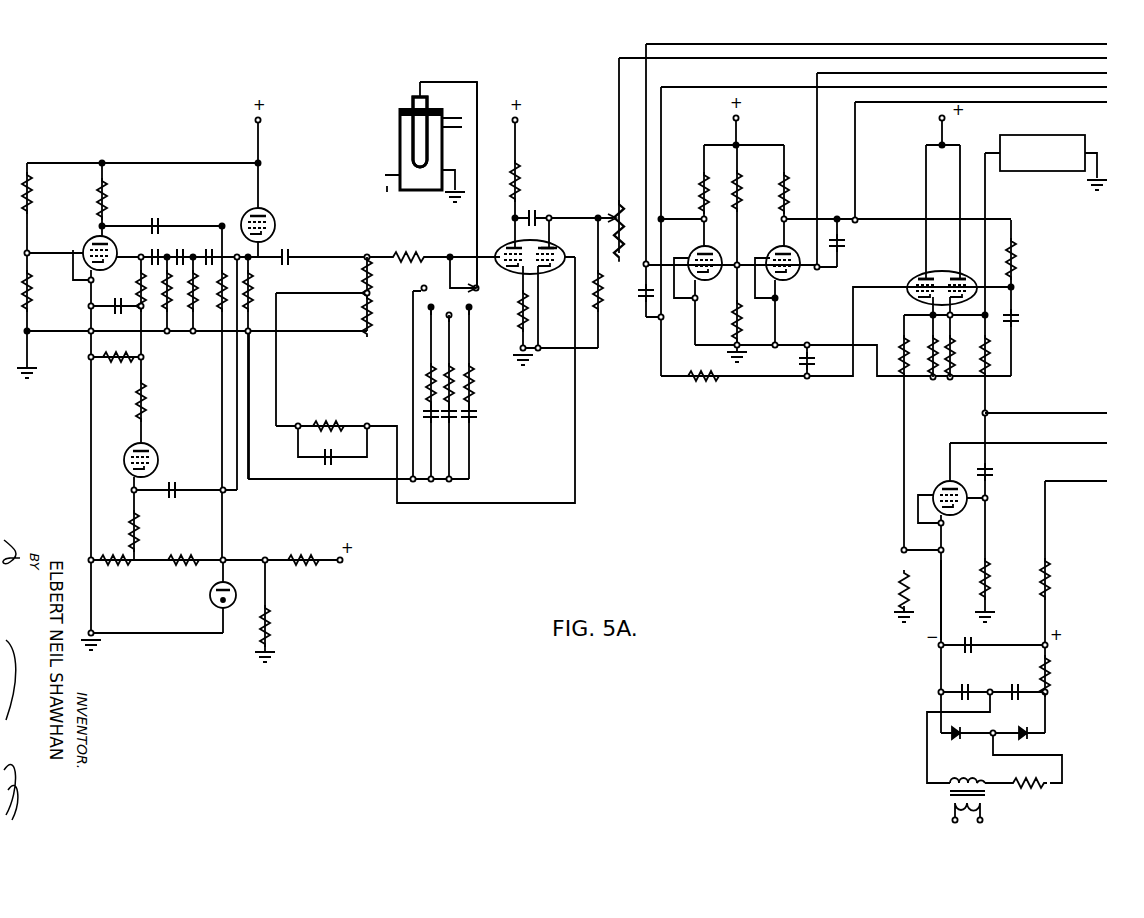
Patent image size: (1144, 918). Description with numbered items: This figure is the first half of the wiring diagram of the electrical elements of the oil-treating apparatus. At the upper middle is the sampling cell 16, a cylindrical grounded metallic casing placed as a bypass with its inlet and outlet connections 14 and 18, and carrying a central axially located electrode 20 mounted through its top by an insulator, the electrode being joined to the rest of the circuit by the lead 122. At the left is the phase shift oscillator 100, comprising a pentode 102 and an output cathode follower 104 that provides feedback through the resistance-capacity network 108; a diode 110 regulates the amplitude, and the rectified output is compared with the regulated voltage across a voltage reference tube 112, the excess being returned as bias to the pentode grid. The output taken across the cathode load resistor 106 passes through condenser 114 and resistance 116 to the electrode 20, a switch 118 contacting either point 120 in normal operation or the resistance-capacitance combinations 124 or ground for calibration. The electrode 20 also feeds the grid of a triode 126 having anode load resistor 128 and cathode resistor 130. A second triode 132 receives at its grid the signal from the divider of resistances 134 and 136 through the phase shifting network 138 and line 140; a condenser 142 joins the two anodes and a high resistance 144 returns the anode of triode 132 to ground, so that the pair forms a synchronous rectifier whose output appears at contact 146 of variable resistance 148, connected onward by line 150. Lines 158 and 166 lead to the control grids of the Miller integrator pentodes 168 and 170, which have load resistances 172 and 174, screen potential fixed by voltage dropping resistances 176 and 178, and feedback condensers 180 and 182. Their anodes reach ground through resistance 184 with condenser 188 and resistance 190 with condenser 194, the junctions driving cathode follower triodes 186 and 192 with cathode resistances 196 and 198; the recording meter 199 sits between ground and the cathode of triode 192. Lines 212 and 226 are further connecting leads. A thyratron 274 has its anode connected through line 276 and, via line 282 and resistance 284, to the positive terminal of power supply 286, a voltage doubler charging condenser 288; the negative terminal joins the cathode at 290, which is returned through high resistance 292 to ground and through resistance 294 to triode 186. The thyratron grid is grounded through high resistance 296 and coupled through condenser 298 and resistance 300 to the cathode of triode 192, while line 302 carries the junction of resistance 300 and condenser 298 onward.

The inlet connection 14 is at (452, 116).
The cell 16 is at (400, 140).
The outlet connection 18 is at (390, 188).
The central axially located electrode 20 is at (412, 105).
The phase shift oscillator 100 is at (156, 145).
The pentode 102 is at (93, 240).
The output cathode follower 104 is at (271, 216).
The cathode load resistor 106 is at (290, 282).
The resistance-capacity network 108 is at (195, 243).
The diode 110 is at (151, 449).
The voltage reference tube 112 is at (210, 589).
The condenser 114 is at (292, 252).
The resistance 116 is at (404, 254).
The switch 118 is at (470, 305).
The point 120 is at (480, 288).
The lead from cell 122 is at (478, 165).
The resistance-capacitance combinations 124 is at (486, 404).
The triode 126 is at (503, 243).
The anode load resistor 128 is at (522, 176).
The cathode resistor 130 is at (518, 320).
The second triode 132 is at (557, 251).
The resistance 134 is at (371, 287).
The resistance 136 is at (371, 320).
The phase shifting network 138 is at (354, 416).
The line 140 is at (519, 504).
The condenser 142 is at (538, 214).
The high resistance 144 is at (600, 307).
The contact 146 is at (600, 212).
The variable resistance 148 is at (624, 198).
The line 150 is at (1062, 61).
The line 158 is at (1062, 47).
The line 166 is at (1062, 75).
The pentode 168 is at (692, 252).
The pentode 170 is at (774, 249).
The load resistance 172 is at (700, 185).
The load resistance 174 is at (788, 183).
The voltage dropping resistance 176 is at (741, 183).
The voltage dropping resistance 178 is at (740, 335).
The condenser 180 is at (642, 290).
The condenser 182 is at (840, 250).
The resistance 184 is at (703, 380).
The triode 186 is at (921, 283).
The condenser 188 is at (803, 370).
The resistance 190 is at (1014, 246).
The triode 192 is at (958, 278).
The condenser 194 is at (1015, 317).
The cathode resistance 196 is at (930, 346).
The cathode resistance 198 is at (953, 346).
The recording meter 199 is at (1040, 135).
The lead 212 is at (1062, 89).
The lead 226 is at (1062, 104).
The thyratron 274 is at (940, 482).
The line 276 is at (1042, 443).
The line 282 is at (1060, 481).
The resistance 284 is at (1048, 576).
The power supply 286 is at (1064, 662).
The condenser 288 is at (973, 649).
The connection to cathode 290 is at (943, 610).
The high resistance 292 is at (900, 585).
The resistance 294 is at (901, 342).
The high resistance 296 is at (989, 564).
The condenser 298 is at (993, 472).
The resistance 300 is at (990, 350).
The line 302 is at (1020, 413).